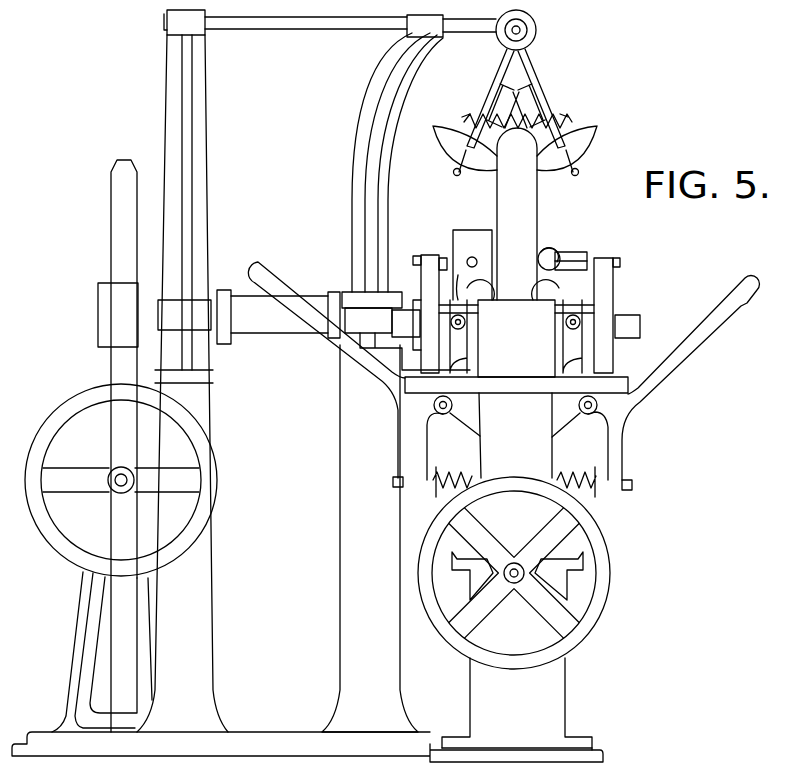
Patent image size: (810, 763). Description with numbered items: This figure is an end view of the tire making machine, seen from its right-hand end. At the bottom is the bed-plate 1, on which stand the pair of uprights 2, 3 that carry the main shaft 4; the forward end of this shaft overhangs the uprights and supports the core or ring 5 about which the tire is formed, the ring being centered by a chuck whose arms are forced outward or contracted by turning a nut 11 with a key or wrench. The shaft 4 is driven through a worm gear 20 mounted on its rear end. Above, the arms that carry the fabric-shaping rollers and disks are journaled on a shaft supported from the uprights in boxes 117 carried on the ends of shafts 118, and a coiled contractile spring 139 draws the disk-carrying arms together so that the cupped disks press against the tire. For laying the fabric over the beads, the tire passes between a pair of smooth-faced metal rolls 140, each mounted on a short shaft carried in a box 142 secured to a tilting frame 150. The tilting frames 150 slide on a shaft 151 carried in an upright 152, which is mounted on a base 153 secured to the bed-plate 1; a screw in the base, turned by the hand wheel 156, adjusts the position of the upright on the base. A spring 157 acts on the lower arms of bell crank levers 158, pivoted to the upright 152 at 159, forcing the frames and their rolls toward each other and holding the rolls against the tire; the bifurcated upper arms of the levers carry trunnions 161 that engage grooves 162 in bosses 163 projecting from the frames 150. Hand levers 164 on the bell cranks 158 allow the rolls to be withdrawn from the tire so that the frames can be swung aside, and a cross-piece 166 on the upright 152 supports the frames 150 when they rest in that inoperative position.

The bed-plate 1 is at (598, 757).
The upright 2 is at (347, 483).
The upright 3 is at (197, 575).
The main shaft 4 is at (280, 330).
The core or ring 5 is at (517, 214).
The nut 11 is at (479, 258).
The worm gear 20 is at (122, 203).
The box 117 is at (537, 32).
The shaft 118 is at (297, 28).
The coiled contractile spring 139 is at (512, 117).
The roll 140 is at (545, 248).
The box 142 is at (571, 256).
The tilting frame 150 is at (427, 280).
The shaft 151 is at (643, 323).
The upright 152 is at (533, 458).
The base 153 is at (550, 697).
The hand wheel 156 is at (601, 600).
The spring 157 is at (582, 498).
The bell crank lever 158 is at (613, 410).
The pivot 159 is at (617, 423).
The trunnion 161 is at (580, 322).
The groove 162 is at (427, 280).
The boss 163 is at (584, 330).
The hand lever 164 is at (697, 357).
The cross-piece 166 is at (524, 382).